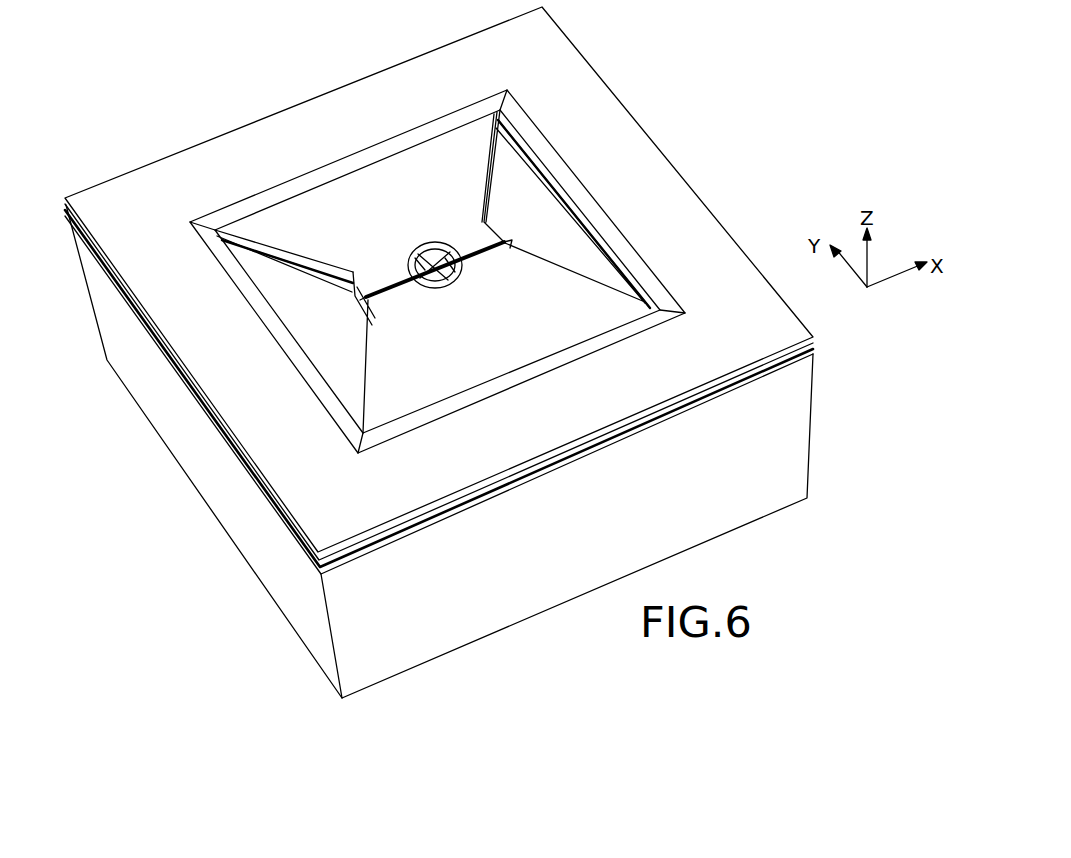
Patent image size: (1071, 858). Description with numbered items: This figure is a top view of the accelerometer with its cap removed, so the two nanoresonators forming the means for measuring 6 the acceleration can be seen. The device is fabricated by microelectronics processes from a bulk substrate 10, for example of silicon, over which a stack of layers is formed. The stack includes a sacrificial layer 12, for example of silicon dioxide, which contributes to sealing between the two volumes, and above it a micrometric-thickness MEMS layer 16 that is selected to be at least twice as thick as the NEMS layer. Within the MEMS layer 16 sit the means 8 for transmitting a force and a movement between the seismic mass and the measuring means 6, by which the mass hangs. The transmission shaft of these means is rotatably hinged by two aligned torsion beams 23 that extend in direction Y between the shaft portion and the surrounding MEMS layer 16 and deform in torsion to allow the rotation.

The means for measuring 6 is at (353, 312).
The means for transmitting a force and a movement 8 is at (433, 247).
The substrate 10 is at (793, 436).
The sacrificial layer 12 is at (806, 345).
The MEMS layer 16 is at (635, 165).
The torsion beams 23 is at (415, 262).